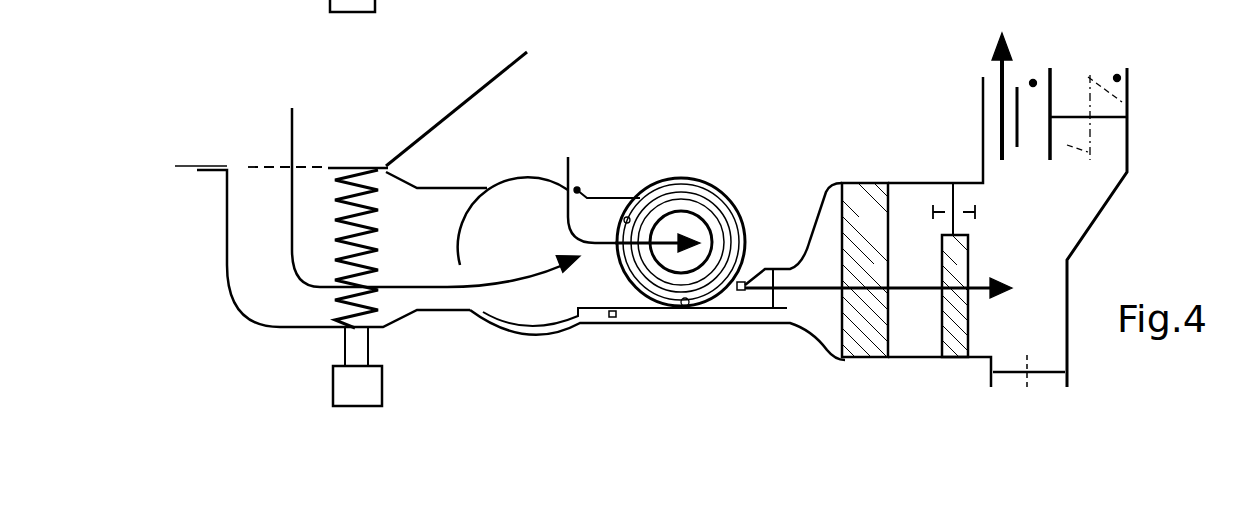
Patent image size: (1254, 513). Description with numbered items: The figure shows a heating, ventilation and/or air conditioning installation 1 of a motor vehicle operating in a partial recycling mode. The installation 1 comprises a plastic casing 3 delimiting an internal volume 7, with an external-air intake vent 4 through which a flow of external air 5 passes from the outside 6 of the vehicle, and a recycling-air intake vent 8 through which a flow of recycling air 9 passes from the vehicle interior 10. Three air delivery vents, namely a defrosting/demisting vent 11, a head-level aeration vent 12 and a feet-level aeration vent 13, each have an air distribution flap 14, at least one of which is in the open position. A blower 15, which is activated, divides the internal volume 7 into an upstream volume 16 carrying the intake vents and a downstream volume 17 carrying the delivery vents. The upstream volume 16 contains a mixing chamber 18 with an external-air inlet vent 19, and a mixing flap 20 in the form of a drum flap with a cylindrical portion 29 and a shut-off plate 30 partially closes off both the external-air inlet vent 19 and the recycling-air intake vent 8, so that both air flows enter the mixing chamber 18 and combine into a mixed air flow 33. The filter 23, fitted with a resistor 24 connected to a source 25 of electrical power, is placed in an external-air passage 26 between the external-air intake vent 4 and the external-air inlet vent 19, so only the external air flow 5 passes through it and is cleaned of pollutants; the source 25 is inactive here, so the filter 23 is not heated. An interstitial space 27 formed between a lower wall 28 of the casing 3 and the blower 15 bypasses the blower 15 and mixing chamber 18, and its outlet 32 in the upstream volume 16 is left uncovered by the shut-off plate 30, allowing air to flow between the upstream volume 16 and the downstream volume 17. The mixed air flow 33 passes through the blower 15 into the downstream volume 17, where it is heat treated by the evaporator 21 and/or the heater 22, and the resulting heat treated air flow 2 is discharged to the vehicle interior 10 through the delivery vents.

The heating, ventilation and/or air conditioning installation 1 is at (786, 146).
The flow of heat treated air 2 is at (997, 70).
The casing 3 is at (227, 214).
The external-air intake vent 4 is at (237, 166).
The flow of external air 5 is at (293, 110).
The outside of the vehicle 6 is at (257, 143).
The internal volume 7 is at (680, 242).
The recycling-air intake vent 8 is at (577, 190).
The flow of recycling air 9 is at (563, 160).
The vehicle interior 10 is at (666, 101).
The defrosting/demisting vent 11 is at (1008, 360).
The head-level aeration vent 12 is at (1033, 83).
The feet-level aeration vent 13 is at (1117, 78).
The air distribution flap 14 is at (1020, 135).
The blower 15 is at (708, 282).
The upstream volume 16 is at (243, 246).
The downstream volume 17 is at (900, 269).
The mixing chamber 18 is at (523, 241).
The external-air inlet vent 19 is at (460, 266).
The mixing flap 20 is at (471, 226).
The evaporator 21 is at (852, 183).
The heater 22 is at (972, 262).
The filter 23 is at (376, 206).
The resistor 24 is at (376, 258).
The source of electrical power 25 is at (346, 399).
The external-air passage 26 is at (372, 148).
The interstitial space 27 is at (613, 317).
The wall 28 is at (686, 324).
The cylindrical portion 29 is at (494, 189).
The shut-off plate 30 is at (458, 240).
The outlet 32 is at (470, 312).
The mixed air flow 33 is at (900, 290).